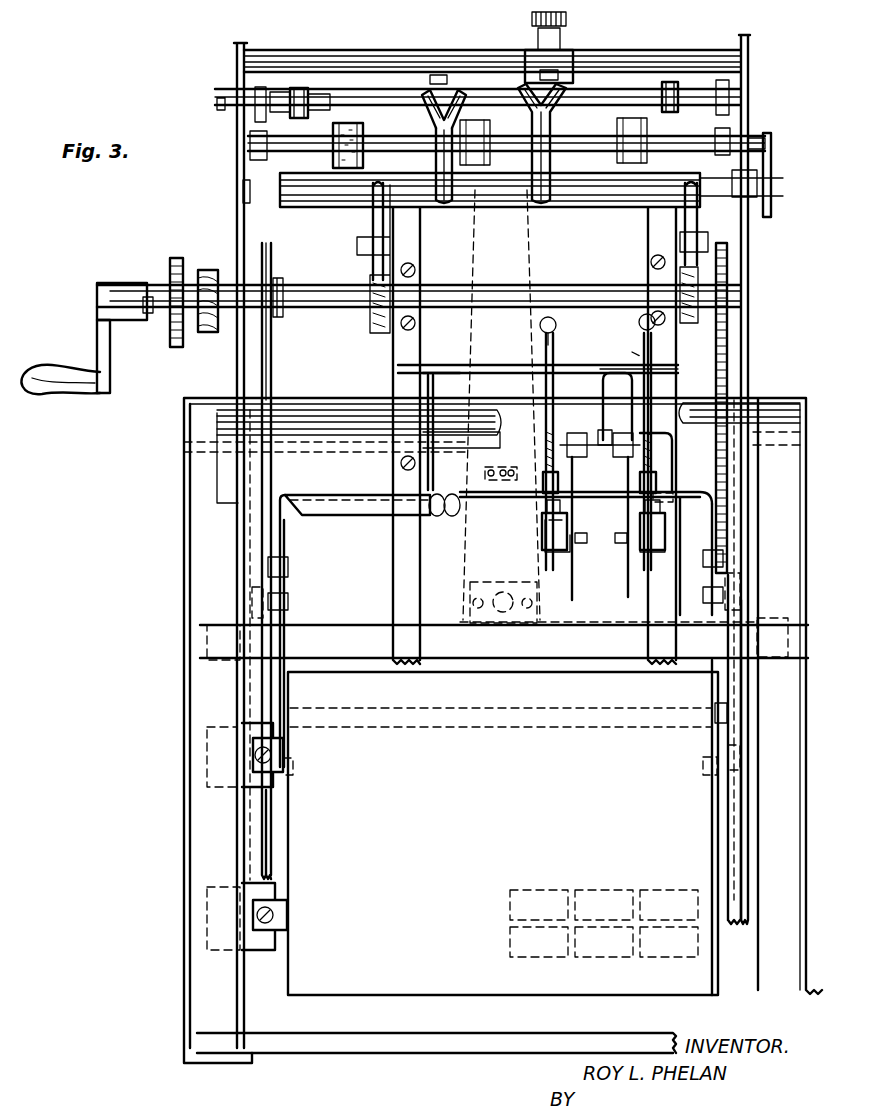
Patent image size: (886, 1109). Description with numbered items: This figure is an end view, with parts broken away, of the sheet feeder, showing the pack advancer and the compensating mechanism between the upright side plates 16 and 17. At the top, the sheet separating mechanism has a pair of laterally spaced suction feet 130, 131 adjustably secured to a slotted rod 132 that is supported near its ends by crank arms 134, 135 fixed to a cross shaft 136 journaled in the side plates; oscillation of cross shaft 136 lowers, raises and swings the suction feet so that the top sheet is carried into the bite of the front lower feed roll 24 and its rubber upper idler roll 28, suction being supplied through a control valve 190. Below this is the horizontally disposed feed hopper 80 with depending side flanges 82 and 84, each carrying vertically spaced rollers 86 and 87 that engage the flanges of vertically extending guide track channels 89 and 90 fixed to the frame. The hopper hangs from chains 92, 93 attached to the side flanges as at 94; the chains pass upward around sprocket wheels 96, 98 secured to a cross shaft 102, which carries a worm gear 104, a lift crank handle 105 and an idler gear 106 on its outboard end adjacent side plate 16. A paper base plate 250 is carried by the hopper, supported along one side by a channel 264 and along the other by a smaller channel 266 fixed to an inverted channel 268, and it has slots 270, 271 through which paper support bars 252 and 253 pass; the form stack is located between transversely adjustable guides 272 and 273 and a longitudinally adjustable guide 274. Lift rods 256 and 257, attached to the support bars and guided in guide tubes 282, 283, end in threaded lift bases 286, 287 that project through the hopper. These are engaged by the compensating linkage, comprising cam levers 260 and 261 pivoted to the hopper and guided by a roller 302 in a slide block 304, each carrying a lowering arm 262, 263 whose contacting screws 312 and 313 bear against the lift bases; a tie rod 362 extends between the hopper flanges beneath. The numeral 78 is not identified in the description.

The side plate 16 is at (234, 47).
The side plate 17 is at (768, 38).
The lower feed roll 24 is at (617, 208).
The upper feed idler roll 28 is at (353, 124).
The disc 78 is at (771, 205).
The feed hopper 80 is at (318, 504).
The side flange 82 is at (290, 672).
The side flange 84 is at (712, 668).
The roller 86 is at (730, 573).
The roller 87 is at (270, 800).
The guide track channel 89 is at (268, 834).
The guide track channel 90 is at (728, 832).
The chain 92 is at (271, 370).
The chain 93 is at (716, 364).
The chain attachment 94 is at (284, 541).
The sprocket wheel 96 is at (265, 250).
The sprocket wheel 98 is at (728, 248).
The cross shaft 102 is at (148, 313).
The worm gear 104 is at (207, 270).
The lift crank handle 105 is at (50, 370).
The idler gear 106 is at (174, 258).
The suction foot 130 is at (445, 204).
The suction foot 131 is at (548, 202).
The slotted rod 132 is at (505, 93).
The crank arm 134 is at (300, 88).
The crank arm 135 is at (668, 82).
The cross shaft 136 is at (222, 100).
The control valve 190 is at (470, 110).
The paper base plate 250 is at (436, 365).
The paper support bar 252 is at (557, 325).
The paper support bar 253 is at (640, 327).
The lift rod 256 is at (546, 375).
The lift rod 257 is at (650, 367).
The cam lever 260 is at (572, 580).
The cam lever 261 is at (633, 598).
The lowering arm 262 is at (545, 552).
The lowering arm 263 is at (645, 552).
The channel 264 is at (423, 376).
The channel 266 is at (644, 400).
The inverted channel 268 is at (498, 466).
The slot 270 is at (544, 340).
The slot 271 is at (619, 357).
The guide 272 is at (420, 240).
The guide 273 is at (660, 222).
The guide 274 is at (463, 565).
The guide tube 282 is at (546, 404).
The guide tube 283 is at (621, 406).
The lift base 286 is at (543, 485).
The lift base 287 is at (655, 490).
The roller 302 is at (578, 458).
The slide block 304 is at (640, 420).
The contacting screw 312 is at (542, 520).
The contacting screw 313 is at (648, 505).
The tie rod 362 is at (372, 727).